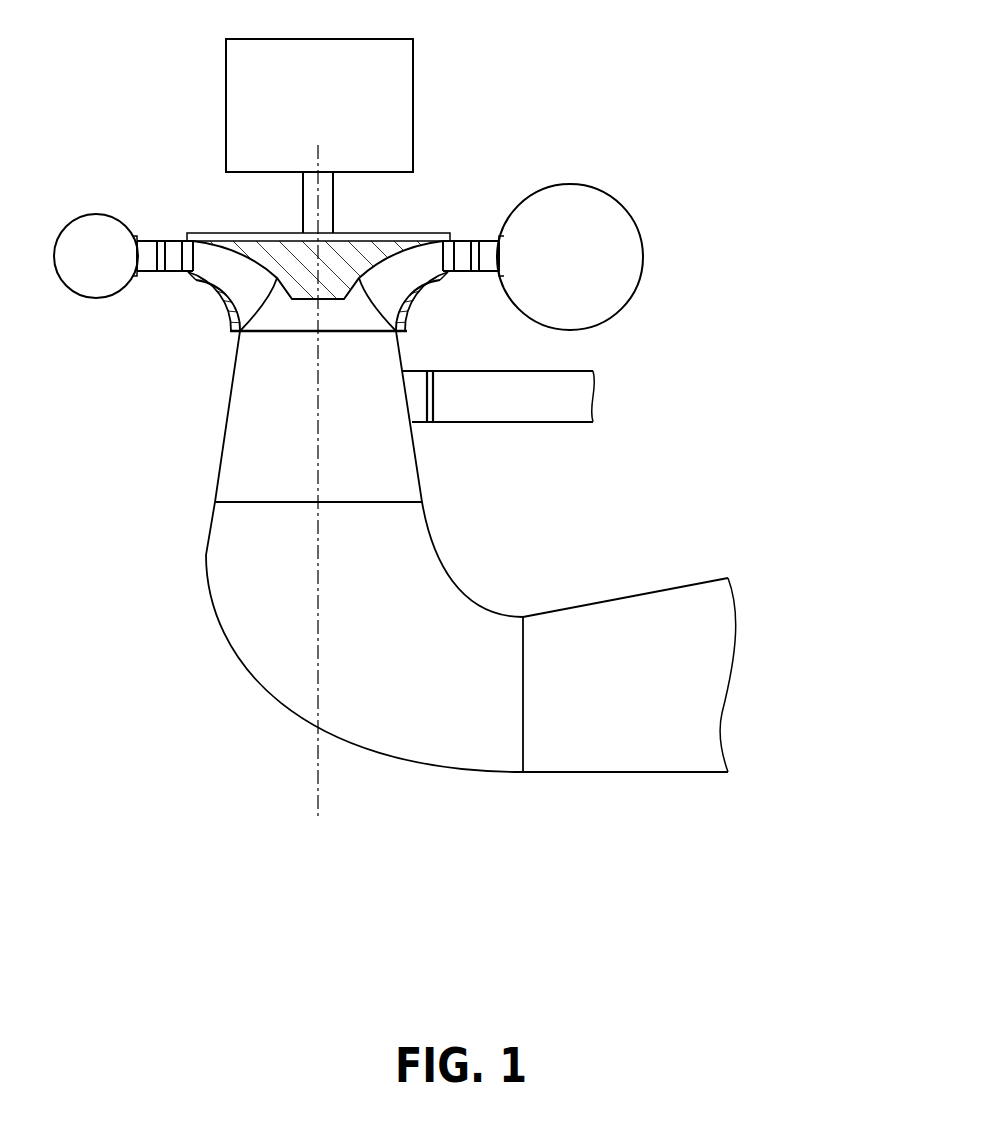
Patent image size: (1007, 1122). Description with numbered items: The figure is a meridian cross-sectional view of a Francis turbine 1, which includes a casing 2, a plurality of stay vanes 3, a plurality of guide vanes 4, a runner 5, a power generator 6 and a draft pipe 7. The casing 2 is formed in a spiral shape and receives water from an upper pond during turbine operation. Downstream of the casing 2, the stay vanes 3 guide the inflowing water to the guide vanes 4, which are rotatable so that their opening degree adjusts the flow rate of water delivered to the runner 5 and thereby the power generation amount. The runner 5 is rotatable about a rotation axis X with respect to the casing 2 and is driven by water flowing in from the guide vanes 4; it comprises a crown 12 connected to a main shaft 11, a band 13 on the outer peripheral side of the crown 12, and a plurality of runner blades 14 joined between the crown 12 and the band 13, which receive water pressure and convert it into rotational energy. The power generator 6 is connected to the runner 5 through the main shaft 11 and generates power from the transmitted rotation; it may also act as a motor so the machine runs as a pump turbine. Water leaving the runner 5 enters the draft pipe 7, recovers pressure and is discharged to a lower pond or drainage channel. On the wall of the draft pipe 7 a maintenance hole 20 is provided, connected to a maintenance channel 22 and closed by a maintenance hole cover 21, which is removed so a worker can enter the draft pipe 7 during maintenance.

The Francis turbine 1 is at (618, 88).
The casing 2 is at (618, 200).
The stay vanes 3 is at (487, 248).
The guide vanes 4 is at (460, 248).
The runner 5 is at (417, 227).
The power generator 6 is at (226, 100).
The draft pipe 7 is at (415, 433).
The main shaft 11 is at (303, 200).
The crown 12 is at (353, 241).
The band 13 is at (413, 303).
The runner blades 14 is at (392, 284).
The maintenance hole 20 is at (413, 387).
The maintenance hole cover 21 is at (433, 397).
The maintenance channel 22 is at (550, 370).
The rotation axis X is at (317, 785).